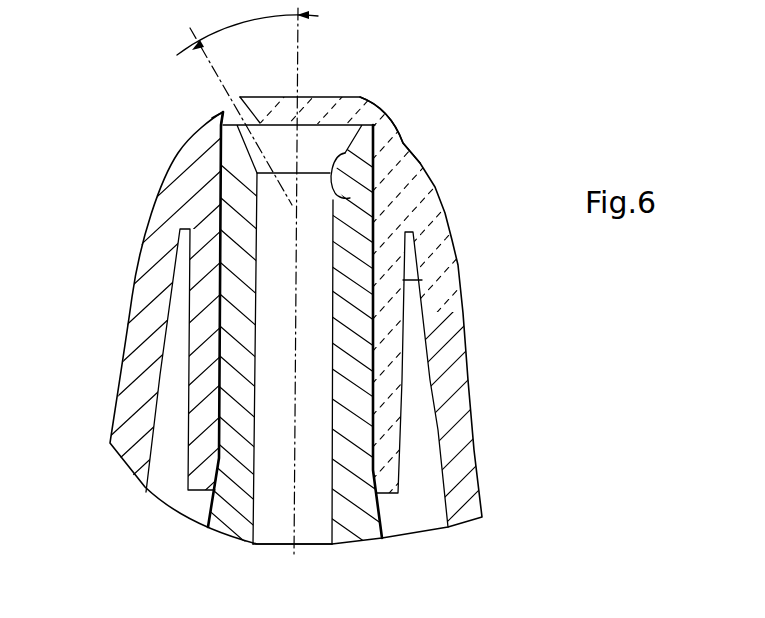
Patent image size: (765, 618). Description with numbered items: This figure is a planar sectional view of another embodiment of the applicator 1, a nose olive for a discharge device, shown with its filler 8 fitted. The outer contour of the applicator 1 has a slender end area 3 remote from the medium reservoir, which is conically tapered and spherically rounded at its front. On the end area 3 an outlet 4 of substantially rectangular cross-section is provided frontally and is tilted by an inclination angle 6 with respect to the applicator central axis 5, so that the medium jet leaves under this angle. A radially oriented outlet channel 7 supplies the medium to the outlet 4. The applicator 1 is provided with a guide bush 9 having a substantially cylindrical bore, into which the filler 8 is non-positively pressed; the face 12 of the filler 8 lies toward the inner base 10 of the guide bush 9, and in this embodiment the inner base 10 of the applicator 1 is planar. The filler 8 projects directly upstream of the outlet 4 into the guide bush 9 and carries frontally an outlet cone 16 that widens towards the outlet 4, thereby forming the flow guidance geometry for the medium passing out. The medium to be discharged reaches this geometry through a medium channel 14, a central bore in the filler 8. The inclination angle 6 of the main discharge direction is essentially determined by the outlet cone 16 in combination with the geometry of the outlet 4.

The applicator 1 is at (480, 146).
The end area 3 is at (457, 407).
The outlet 4 is at (222, 113).
The applicator central axis 5 is at (295, 486).
The inclination angle 6 is at (233, 25).
The outlet channel 7 is at (245, 132).
The filler 8 is at (240, 352).
The guide bush 9 is at (387, 323).
The inner base 10 is at (321, 125).
The face 12 is at (375, 147).
The medium channel 14 is at (313, 507).
The outlet cone 16 is at (343, 197).